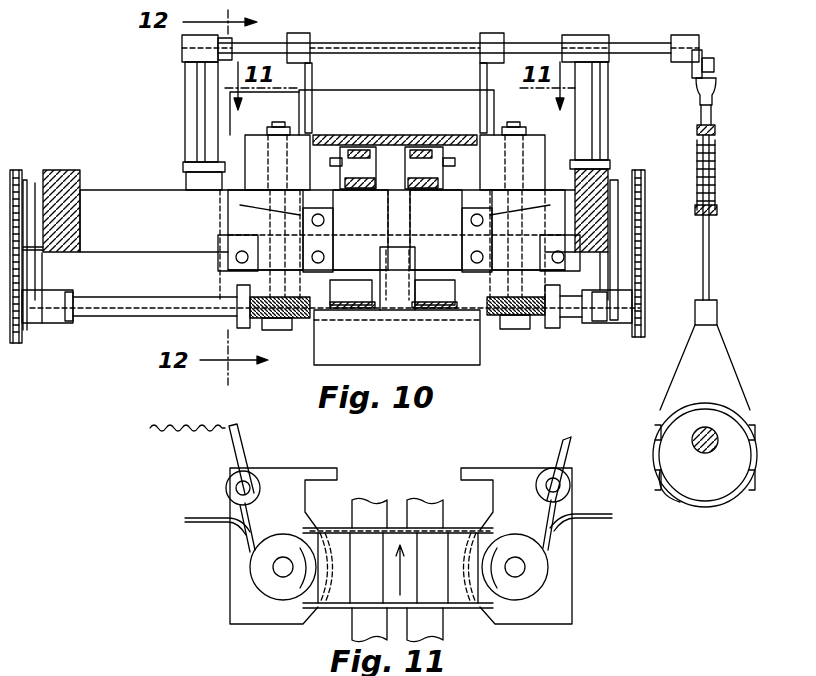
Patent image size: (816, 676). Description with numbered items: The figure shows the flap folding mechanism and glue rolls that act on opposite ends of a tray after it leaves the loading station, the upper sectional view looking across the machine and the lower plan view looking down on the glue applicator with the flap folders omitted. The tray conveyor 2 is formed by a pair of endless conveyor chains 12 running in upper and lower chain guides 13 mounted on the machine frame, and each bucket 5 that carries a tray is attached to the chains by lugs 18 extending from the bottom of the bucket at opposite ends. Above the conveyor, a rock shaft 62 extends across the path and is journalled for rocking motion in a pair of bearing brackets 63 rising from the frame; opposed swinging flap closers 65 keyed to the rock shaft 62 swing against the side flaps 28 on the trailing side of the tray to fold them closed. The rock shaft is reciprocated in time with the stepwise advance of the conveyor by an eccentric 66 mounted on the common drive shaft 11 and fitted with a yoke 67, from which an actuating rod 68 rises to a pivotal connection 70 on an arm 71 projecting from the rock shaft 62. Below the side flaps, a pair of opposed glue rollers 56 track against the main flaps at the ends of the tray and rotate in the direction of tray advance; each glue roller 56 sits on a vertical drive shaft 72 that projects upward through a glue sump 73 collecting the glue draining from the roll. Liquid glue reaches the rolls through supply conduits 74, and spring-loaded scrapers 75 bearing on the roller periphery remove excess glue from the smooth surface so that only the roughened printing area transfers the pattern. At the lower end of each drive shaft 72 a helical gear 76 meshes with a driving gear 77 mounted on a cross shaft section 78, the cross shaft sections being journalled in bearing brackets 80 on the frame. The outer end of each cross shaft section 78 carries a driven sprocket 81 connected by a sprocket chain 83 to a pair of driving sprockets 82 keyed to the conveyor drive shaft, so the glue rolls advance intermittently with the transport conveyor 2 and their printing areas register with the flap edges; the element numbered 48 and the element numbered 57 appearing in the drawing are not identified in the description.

In FIG. 10, the tray conveyor 2 is at (385, 130).
In FIG. 10, the bucket 5 is at (365, 135).
In FIG. 11, the bucket 5 is at (398, 527).
In FIG. 10, the common drive shaft 11 is at (695, 435).
In FIG. 10, the endless conveyor chain 12 is at (358, 305).
In FIG. 10, the chain guide 13 is at (425, 148).
In FIG. 11, the chain guide 13 is at (368, 515).
In FIG. 10, the lug 18 is at (335, 148).
In FIG. 10, the side flap 28 is at (494, 98).
In FIG. 11, the side flap 28 is at (490, 530).
In FIG. 11, the cage 48 is at (445, 550).
In FIG. 10, the glue roller 56 is at (252, 148).
In FIG. 11, the glue roller 56 is at (265, 585).
In FIG. 10, the bar 57 is at (393, 37).
In FIG. 10, the rock shaft 62 is at (462, 45).
In FIG. 10, the bearing bracket 63 is at (188, 78).
In FIG. 10, the swinging flap closer 65 is at (312, 70).
In FIG. 10, the eccentric 66 is at (718, 488).
In FIG. 10, the yoke 67 is at (688, 500).
In FIG. 10, the actuating rod 68 is at (713, 336).
In FIG. 10, the pivotal connection 70 is at (716, 66).
In FIG. 10, the arm 71 is at (698, 36).
In FIG. 10, the vertical drive shaft 72 is at (275, 125).
In FIG. 11, the vertical drive shaft 72 is at (274, 568).
In FIG. 10, the glue sump 73 is at (235, 226).
In FIG. 11, the glue sump 73 is at (265, 608).
In FIG. 11, the supply conduit 74 is at (205, 517).
In FIG. 11, the spring-loaded scraper 75 is at (245, 548).
In FIG. 10, the helical gear 76 is at (290, 320).
In FIG. 10, the driving gear 77 is at (245, 330).
In FIG. 10, the cross shaft section 78 is at (135, 318).
In FIG. 10, the bearing bracket 80 is at (55, 280).
In FIG. 10, the driven sprocket 81 is at (32, 330).
In FIG. 10, the driving sprocket 82 is at (40, 175).
In FIG. 10, the sprocket chain 83 is at (20, 168).